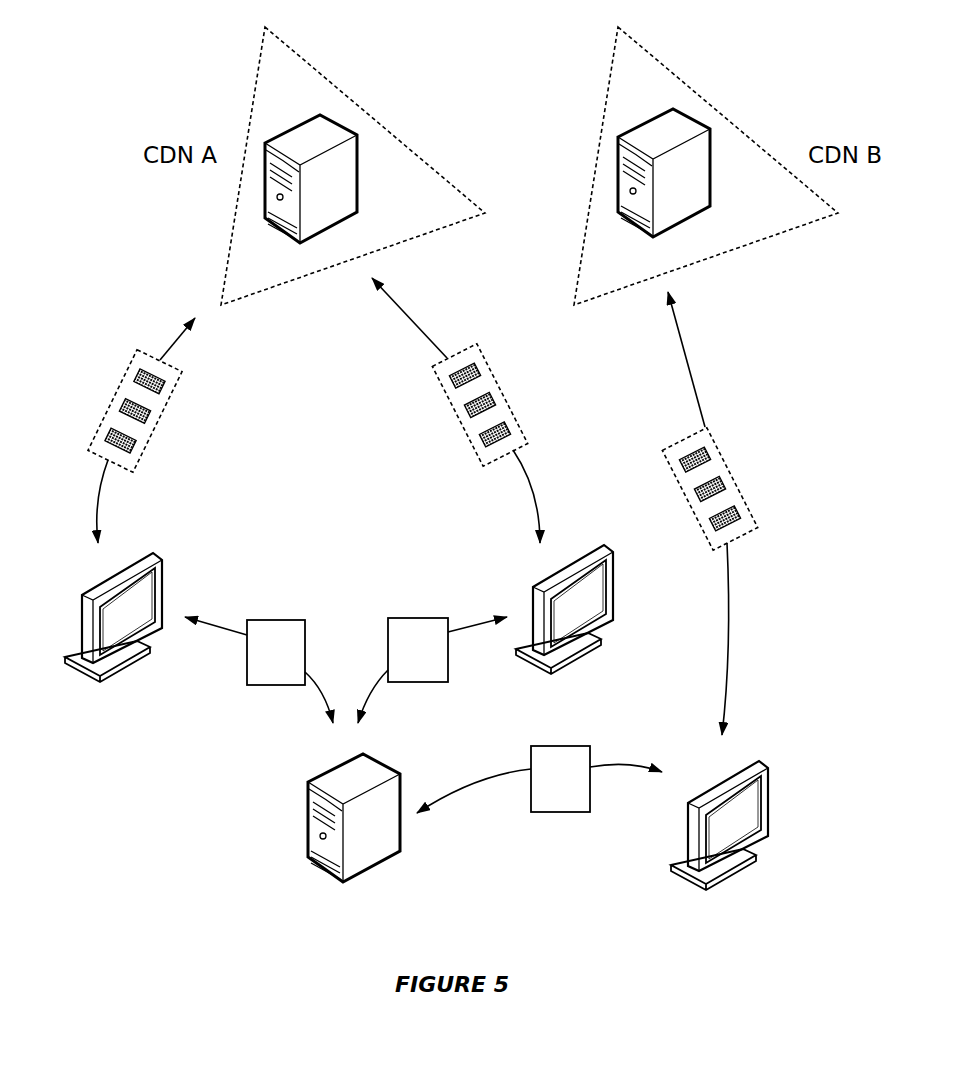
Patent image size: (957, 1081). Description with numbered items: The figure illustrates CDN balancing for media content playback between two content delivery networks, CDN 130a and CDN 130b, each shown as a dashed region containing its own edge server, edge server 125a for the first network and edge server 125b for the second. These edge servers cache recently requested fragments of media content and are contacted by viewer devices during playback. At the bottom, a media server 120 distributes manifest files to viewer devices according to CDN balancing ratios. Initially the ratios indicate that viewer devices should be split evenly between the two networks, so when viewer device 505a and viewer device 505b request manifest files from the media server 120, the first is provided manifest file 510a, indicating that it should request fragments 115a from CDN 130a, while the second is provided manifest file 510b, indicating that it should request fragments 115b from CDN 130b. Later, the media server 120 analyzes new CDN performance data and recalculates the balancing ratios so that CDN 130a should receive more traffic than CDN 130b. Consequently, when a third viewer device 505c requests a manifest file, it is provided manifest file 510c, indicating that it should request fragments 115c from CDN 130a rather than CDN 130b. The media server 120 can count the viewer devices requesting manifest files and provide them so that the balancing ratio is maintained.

The CDN 130a is at (340, 88).
The edge server 125a is at (320, 113).
The CDN 130b is at (693, 88).
The edge server 125b is at (673, 104).
The fragments 115a is at (93, 437).
The fragments 115b is at (753, 513).
The fragments 115c is at (522, 432).
The viewer device 505a is at (130, 562).
The viewer device 505b is at (737, 769).
The third viewer device 505c is at (581, 554).
The manifest file 510a is at (280, 620).
The manifest file 510b is at (563, 746).
The manifest file 510c is at (422, 618).
The media server 120 is at (383, 762).